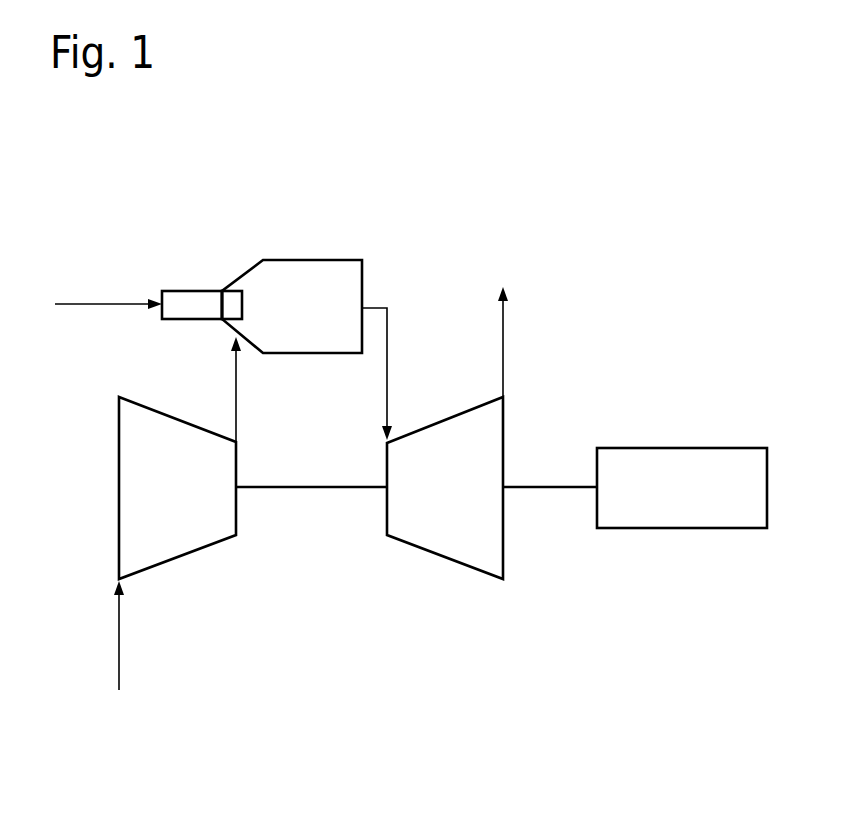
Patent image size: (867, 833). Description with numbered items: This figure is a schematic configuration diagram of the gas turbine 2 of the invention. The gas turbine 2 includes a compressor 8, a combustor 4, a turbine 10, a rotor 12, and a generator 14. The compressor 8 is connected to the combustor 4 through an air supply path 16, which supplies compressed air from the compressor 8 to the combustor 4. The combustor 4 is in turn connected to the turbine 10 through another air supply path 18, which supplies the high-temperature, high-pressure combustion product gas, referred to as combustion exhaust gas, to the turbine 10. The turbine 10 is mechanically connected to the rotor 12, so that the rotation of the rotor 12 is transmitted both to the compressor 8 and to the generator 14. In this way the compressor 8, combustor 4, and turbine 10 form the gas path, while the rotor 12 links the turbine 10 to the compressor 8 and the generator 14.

The gas turbine 2 is at (572, 200).
The combustor 4 is at (282, 257).
The compressor 8 is at (190, 554).
The turbine 10 is at (450, 558).
The rotor 12 is at (521, 486).
The generator 14 is at (668, 445).
The air supply path 16 is at (236, 392).
The air supply path 18 is at (392, 328).